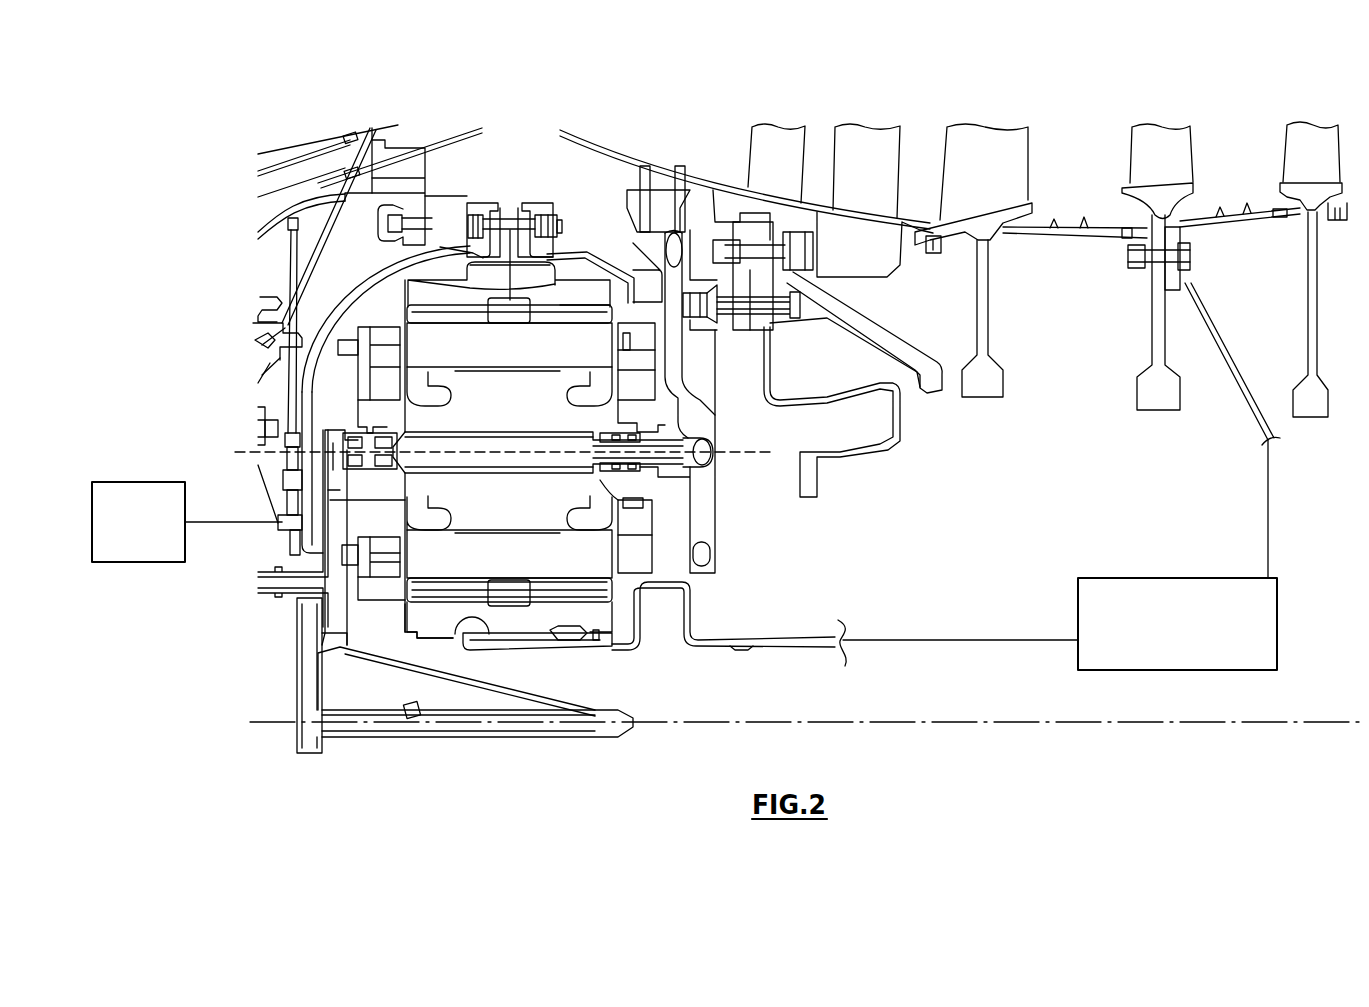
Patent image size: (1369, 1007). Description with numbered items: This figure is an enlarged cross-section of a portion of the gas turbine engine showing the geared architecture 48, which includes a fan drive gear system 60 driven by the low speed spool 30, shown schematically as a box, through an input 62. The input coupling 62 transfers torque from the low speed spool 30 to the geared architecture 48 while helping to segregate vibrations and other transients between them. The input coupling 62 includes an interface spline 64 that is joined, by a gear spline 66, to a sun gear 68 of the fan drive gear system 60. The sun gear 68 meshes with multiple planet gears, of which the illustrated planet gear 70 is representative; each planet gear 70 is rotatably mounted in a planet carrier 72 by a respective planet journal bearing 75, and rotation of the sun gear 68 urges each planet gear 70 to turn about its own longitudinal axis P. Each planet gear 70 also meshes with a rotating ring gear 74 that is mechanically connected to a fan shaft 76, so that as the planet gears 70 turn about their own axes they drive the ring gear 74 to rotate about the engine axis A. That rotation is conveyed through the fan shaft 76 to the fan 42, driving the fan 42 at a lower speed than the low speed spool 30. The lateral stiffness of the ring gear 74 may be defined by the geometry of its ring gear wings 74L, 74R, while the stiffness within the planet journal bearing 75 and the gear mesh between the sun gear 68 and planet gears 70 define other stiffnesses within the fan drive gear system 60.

The low speed spool 30 is at (1187, 638).
The fan 42 is at (154, 533).
The geared architecture 48 is at (539, 155).
The fan drive gear system 60 is at (385, 306).
The input coupling 62 is at (765, 642).
The interface spline 64 is at (525, 636).
The gear spline 66 is at (460, 626).
The sun gear 68 is at (423, 611).
The planet gear 70 is at (512, 573).
The planet carrier 72 is at (638, 392).
The ring gear 74 is at (570, 296).
The ring gear wing 74L is at (461, 272).
The ring gear wing 74R is at (560, 282).
The planet journal bearing 75 is at (412, 492).
The fan shaft 76 is at (320, 340).
The longitudinal axis P is at (523, 450).
The engine axis A is at (1250, 722).